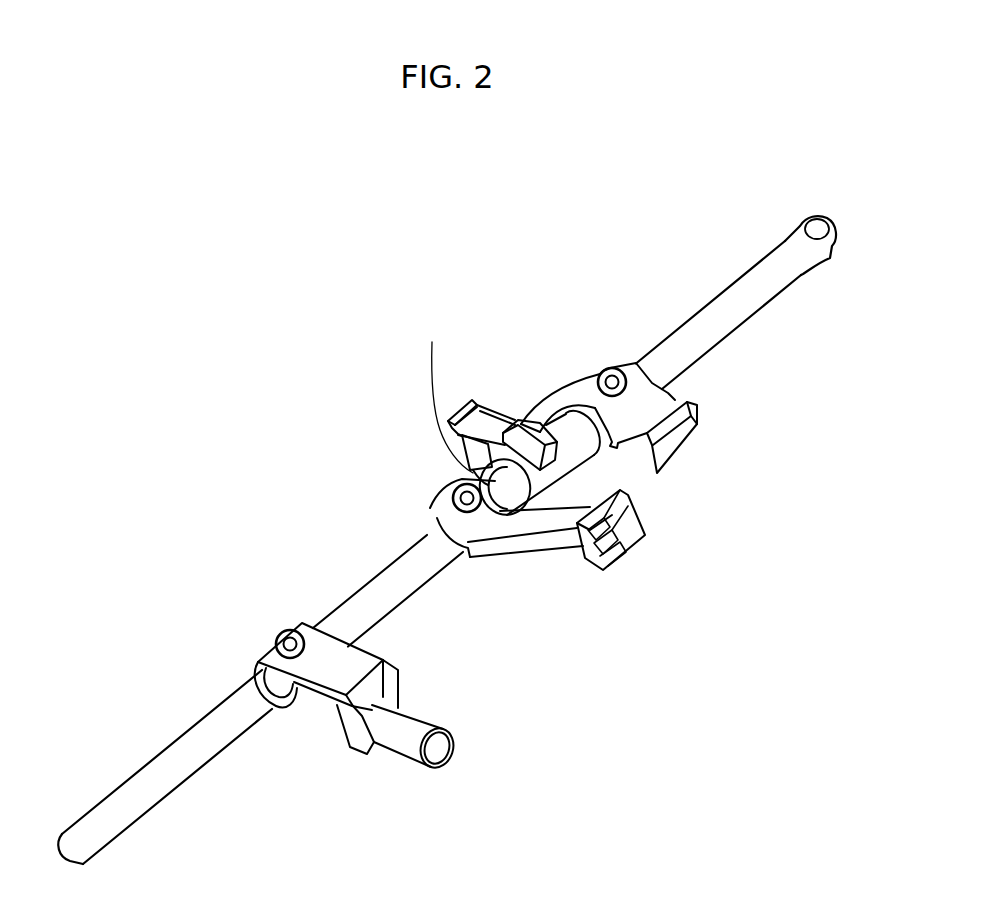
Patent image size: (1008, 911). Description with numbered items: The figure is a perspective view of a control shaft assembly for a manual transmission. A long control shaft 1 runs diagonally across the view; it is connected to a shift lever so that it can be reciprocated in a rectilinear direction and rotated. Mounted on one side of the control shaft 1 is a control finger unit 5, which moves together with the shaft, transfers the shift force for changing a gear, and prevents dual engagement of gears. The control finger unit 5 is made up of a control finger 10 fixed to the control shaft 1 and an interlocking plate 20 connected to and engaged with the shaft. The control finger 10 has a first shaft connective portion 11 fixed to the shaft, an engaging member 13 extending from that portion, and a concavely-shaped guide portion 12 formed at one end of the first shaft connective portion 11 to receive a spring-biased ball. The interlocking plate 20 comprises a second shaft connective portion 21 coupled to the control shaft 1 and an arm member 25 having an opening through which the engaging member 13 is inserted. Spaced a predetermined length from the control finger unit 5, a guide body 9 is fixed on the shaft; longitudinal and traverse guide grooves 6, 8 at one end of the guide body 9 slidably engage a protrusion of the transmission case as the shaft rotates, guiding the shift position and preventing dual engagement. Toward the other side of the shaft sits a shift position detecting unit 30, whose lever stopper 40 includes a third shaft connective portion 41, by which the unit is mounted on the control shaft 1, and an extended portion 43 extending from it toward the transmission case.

The control shaft 1 is at (784, 283).
The control finger unit 5 is at (538, 373).
The longitudinal guide groove 6 is at (637, 548).
The traverse guide groove 8 is at (621, 543).
The guide body 9 is at (540, 537).
The control finger 10 is at (598, 349).
The first shaft connective portion 11 is at (626, 364).
The guide portion 12 is at (693, 437).
The engaging member 13 is at (565, 388).
The interlocking plate 20 is at (483, 375).
The second shaft connective portion 21 is at (505, 413).
The arm member 25 is at (448, 422).
The shift position detecting unit 30 is at (386, 720).
The lever stopper 40 is at (314, 743).
The third shaft connective portion 41 is at (294, 700).
The extended portion 43 is at (337, 703).